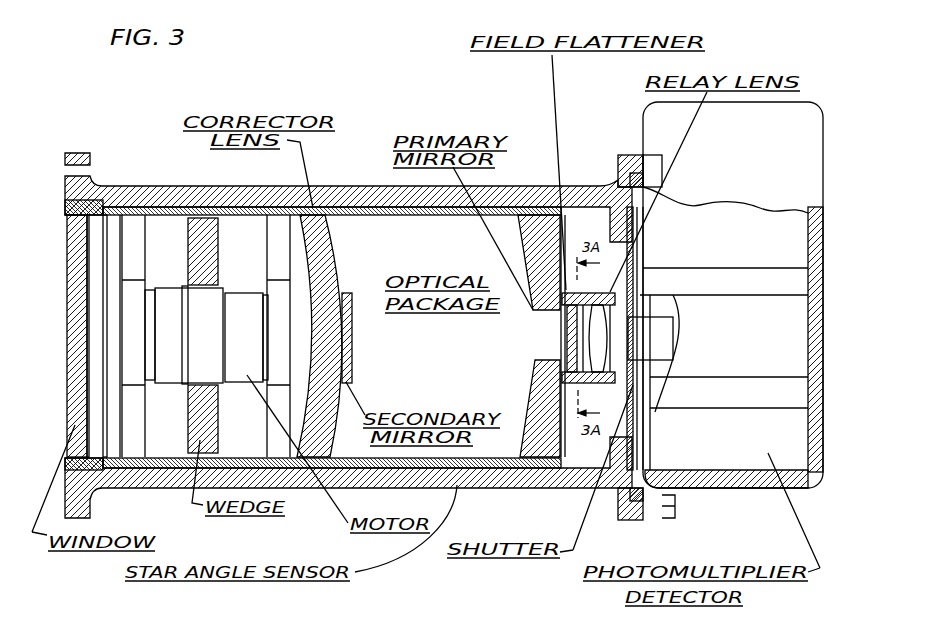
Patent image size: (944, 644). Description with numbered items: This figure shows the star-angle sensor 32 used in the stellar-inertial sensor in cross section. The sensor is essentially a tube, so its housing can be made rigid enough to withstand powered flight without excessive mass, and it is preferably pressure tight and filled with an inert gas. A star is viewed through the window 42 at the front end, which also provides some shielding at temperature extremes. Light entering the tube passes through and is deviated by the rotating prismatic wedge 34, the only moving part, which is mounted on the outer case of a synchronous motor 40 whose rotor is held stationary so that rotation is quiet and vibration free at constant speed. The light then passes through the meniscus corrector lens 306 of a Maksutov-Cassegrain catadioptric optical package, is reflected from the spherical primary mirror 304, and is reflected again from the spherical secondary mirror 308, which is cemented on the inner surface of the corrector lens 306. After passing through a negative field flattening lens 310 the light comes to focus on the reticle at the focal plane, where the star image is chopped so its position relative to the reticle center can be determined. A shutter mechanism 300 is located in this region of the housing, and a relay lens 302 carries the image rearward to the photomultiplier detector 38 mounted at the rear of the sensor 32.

The star-angle sensor 32 is at (557, 486).
The rotating wedge 34 is at (195, 416).
The photomultiplier detector 38 is at (728, 458).
The synchronous motor 40 is at (240, 378).
The window 42 is at (73, 377).
The shutter mechanism 300 is at (640, 390).
The relay lens 302 is at (600, 345).
The primary mirror 304 is at (536, 386).
The corrector lens 306 is at (328, 224).
The secondary mirror 308 is at (352, 350).
The field flattening lens 310 is at (565, 328).